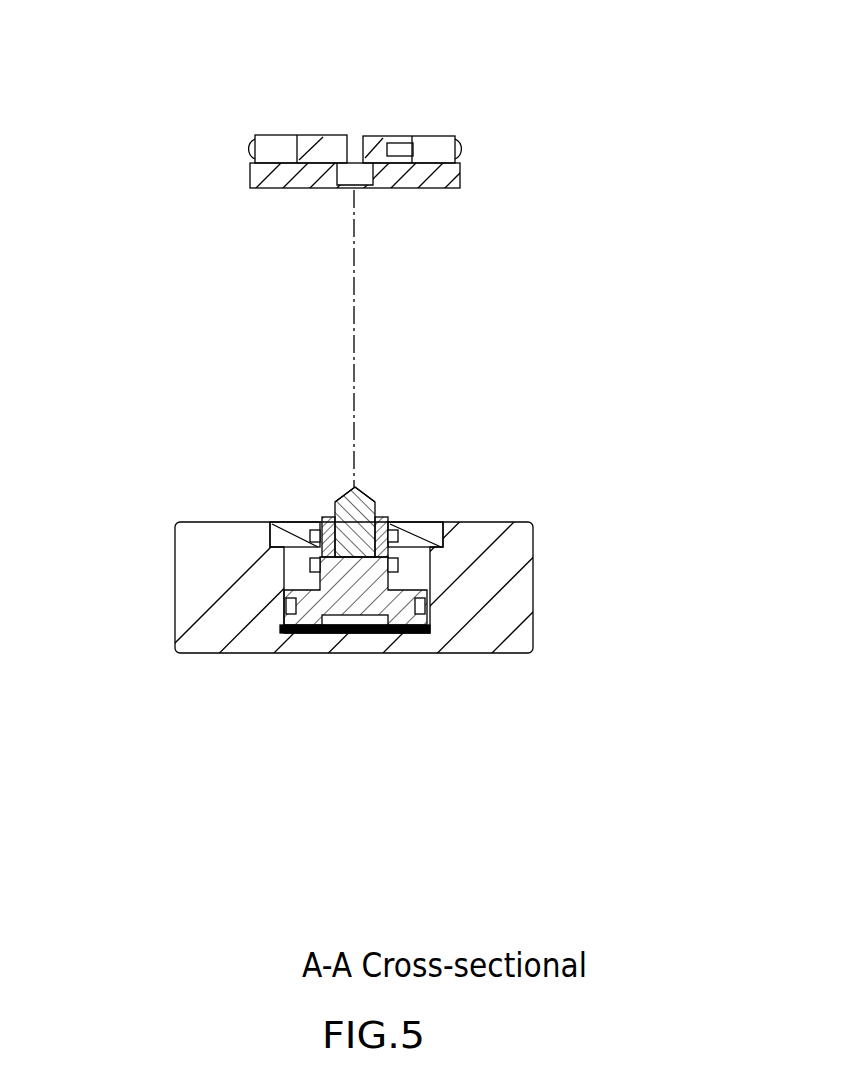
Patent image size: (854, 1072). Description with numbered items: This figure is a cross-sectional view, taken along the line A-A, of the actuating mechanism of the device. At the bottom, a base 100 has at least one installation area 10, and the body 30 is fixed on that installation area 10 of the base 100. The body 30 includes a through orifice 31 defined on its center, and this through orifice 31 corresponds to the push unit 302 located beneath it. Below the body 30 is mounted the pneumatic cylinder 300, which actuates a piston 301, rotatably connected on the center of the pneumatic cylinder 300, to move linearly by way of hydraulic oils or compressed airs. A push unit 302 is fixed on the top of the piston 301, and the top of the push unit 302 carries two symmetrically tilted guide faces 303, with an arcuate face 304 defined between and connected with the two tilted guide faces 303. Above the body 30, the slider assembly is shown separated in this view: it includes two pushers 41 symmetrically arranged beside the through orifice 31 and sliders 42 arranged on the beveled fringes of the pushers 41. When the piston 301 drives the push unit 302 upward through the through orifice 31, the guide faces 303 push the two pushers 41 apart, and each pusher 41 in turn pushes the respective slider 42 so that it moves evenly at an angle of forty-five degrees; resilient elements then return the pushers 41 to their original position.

The installation area 10 is at (390, 552).
The body 30 is at (268, 172).
The through orifice 31 is at (357, 177).
The pusher 41 is at (307, 140).
The slider 42 is at (270, 148).
The base 100 is at (518, 542).
The pneumatic cylinder 300 is at (423, 567).
The piston 301 is at (300, 612).
The push unit 302 is at (333, 550).
The tilted guide face 303 is at (364, 500).
The arcuate face 304 is at (353, 486).